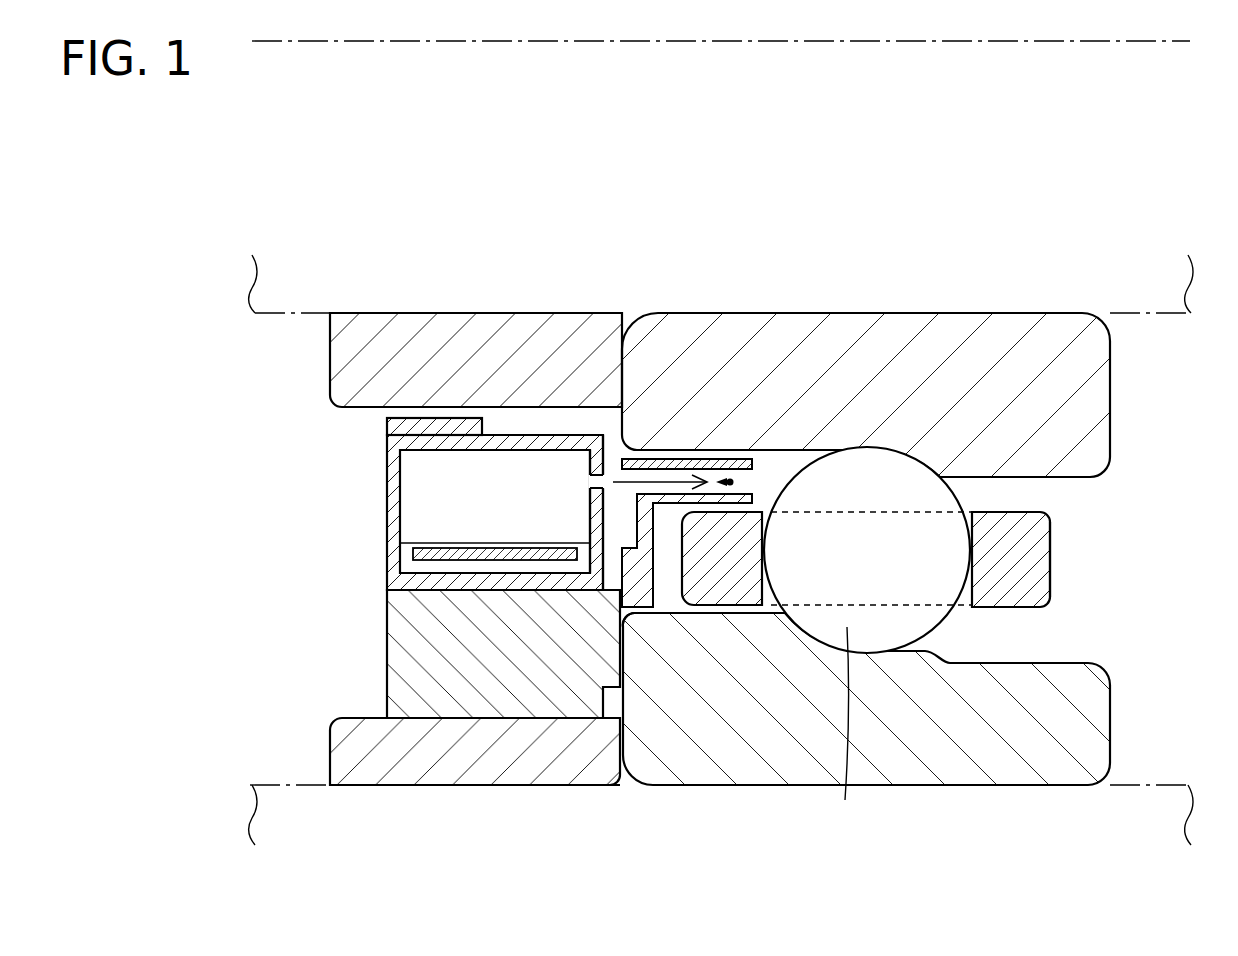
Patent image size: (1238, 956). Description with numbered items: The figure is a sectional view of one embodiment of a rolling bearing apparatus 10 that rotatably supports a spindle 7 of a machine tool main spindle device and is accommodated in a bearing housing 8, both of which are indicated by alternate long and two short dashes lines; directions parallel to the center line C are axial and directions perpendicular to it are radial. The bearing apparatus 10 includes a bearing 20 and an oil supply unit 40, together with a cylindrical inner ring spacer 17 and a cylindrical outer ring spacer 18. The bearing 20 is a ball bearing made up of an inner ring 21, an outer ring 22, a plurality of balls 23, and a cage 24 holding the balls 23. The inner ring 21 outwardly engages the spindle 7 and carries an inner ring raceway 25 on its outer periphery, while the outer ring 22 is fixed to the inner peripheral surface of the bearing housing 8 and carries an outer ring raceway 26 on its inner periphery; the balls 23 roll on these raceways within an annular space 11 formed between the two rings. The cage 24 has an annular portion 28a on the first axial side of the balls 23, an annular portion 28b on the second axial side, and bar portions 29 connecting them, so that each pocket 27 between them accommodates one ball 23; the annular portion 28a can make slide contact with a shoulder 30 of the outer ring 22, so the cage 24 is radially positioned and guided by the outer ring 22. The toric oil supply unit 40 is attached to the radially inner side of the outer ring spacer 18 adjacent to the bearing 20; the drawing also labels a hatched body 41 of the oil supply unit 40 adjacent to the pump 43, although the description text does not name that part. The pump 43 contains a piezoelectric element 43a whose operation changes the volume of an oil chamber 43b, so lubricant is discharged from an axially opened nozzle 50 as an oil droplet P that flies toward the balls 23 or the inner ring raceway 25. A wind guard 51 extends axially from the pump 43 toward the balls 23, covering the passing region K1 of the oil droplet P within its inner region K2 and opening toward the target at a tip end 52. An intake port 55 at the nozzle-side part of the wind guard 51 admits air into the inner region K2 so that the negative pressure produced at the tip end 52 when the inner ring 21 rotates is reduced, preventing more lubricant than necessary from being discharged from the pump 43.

The center line C is at (355, 41).
The spindle 7 is at (285, 318).
The bearing housing 8 is at (283, 772).
The rolling bearing apparatus 10 is at (1130, 703).
The annular space 11 is at (667, 590).
The inner ring spacer 17 is at (385, 335).
The outer ring spacer 18 is at (385, 758).
The bearing 20 is at (1027, 788).
The inner ring 21 is at (1100, 400).
The outer ring 22 is at (1095, 740).
The balls 23 is at (847, 733).
The cage 24 is at (1052, 540).
The inner ring raceway 25 is at (863, 447).
The outer ring raceway 26 is at (817, 638).
The pocket 27 is at (924, 507).
The annular portion 28a is at (733, 590).
The annular portion 28b is at (1032, 573).
The bar portion 29 is at (867, 603).
The shoulder 30 is at (713, 620).
The oil supply unit 40 is at (483, 788).
The yoke 41 is at (403, 660).
The pump 43 is at (385, 512).
The piezoelectric element 43a is at (420, 558).
The oil chamber 43b is at (474, 511).
The nozzle 50 is at (598, 476).
The wind guard 51 is at (723, 455).
The tip end 52 is at (752, 480).
The intake port 55 is at (613, 447).
The passing region K1 is at (673, 478).
The inner region K2 is at (650, 470).
The oil droplet P is at (733, 480).